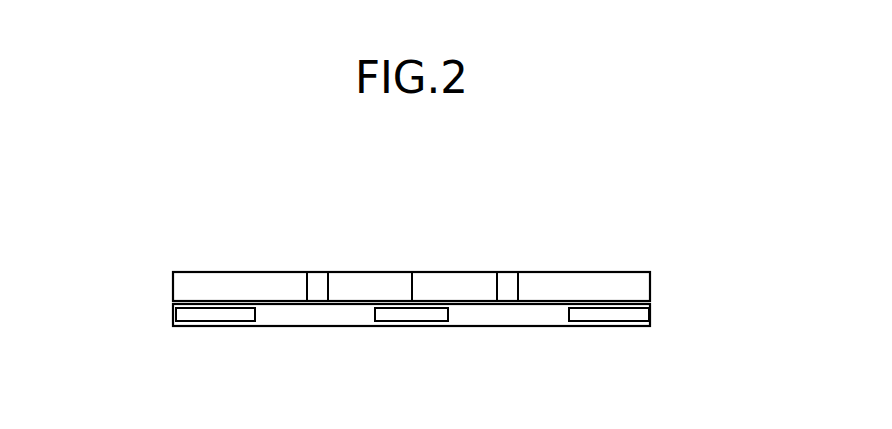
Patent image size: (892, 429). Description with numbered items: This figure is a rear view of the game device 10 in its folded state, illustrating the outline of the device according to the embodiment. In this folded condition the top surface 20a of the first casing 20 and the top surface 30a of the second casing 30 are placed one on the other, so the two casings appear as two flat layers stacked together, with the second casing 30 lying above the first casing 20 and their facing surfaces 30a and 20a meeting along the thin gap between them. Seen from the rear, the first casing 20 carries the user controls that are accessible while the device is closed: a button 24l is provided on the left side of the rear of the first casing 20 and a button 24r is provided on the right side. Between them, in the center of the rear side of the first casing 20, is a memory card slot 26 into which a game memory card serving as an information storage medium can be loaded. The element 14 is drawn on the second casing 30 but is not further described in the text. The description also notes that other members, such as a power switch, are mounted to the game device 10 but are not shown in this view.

The game device 10 is at (601, 207).
The light emitting element 14 is at (448, 272).
The first casing 20 is at (180, 326).
The top surface of the first casing 20a is at (650, 302).
The button 24r is at (236, 313).
The button 24l is at (610, 315).
The memory card slot 26 is at (412, 314).
The second casing 30 is at (183, 272).
The top surface of the second casing 30a is at (175, 298).